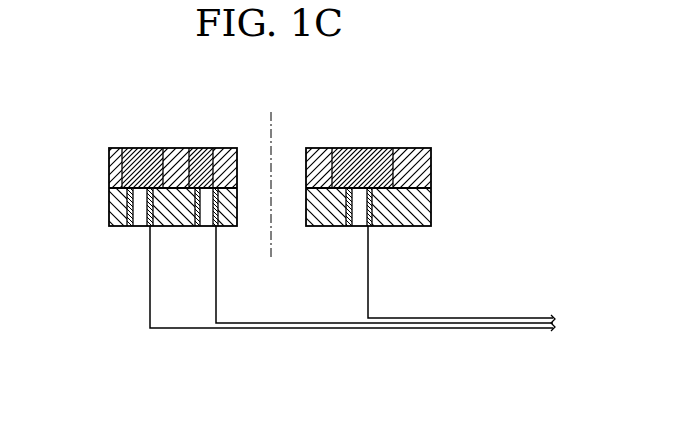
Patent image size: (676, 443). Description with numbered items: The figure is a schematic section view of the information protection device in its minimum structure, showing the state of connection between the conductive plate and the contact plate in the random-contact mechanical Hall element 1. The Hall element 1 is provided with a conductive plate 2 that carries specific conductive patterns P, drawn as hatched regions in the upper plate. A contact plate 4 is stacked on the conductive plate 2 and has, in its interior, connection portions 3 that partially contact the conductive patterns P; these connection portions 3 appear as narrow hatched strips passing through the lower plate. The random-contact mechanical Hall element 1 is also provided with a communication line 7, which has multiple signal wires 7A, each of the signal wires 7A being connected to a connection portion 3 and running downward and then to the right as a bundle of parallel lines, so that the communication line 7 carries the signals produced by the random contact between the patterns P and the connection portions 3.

The random-contact mechanical Hall element 1 is at (457, 108).
The conductive plate 2 is at (431, 168).
The connection portion 3 is at (195, 227).
The contact plate 4 is at (431, 205).
The conductive pattern P is at (152, 156).
The communication line 7 is at (352, 334).
The signal wire 7A is at (482, 396).